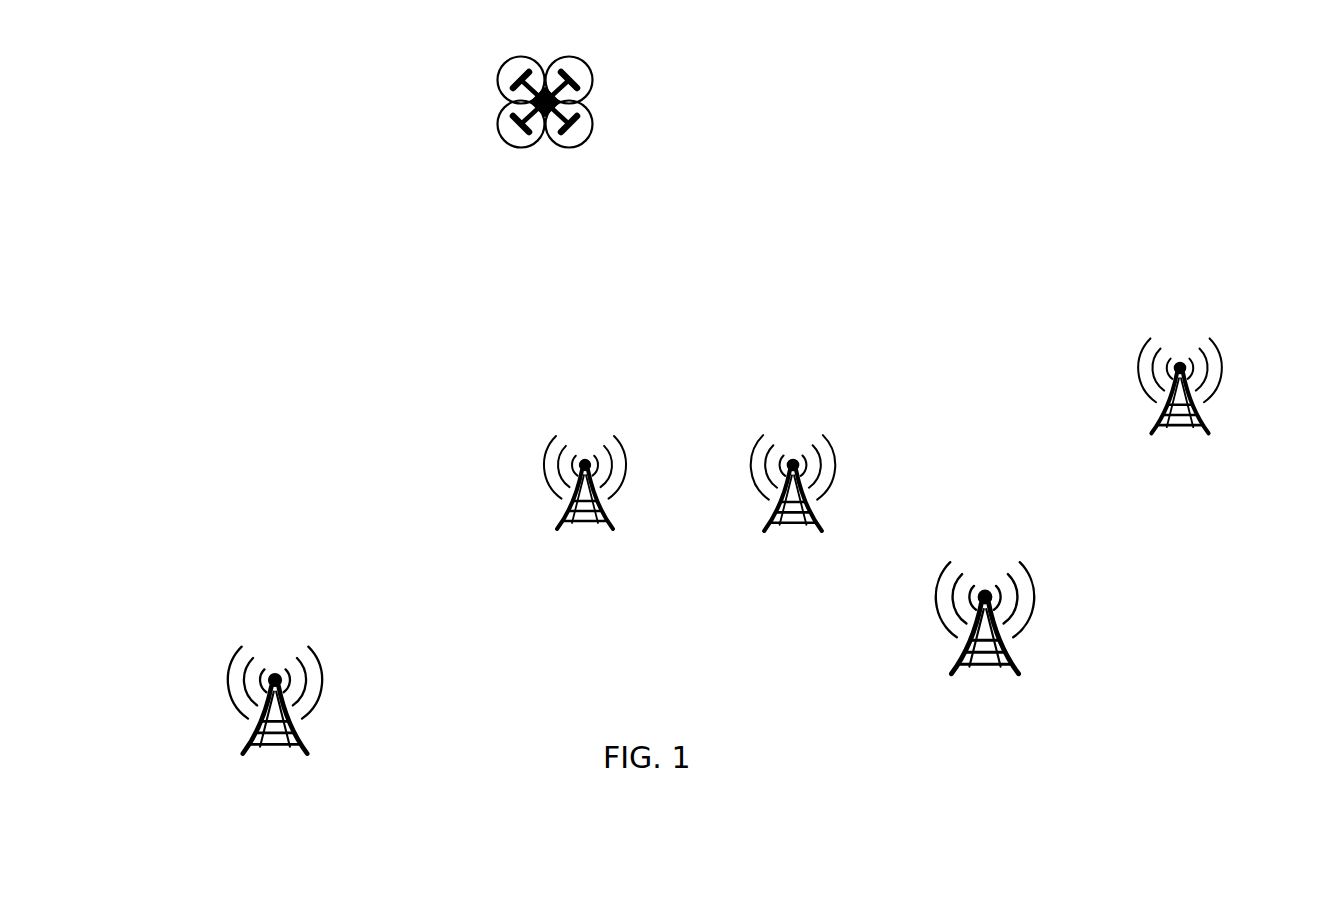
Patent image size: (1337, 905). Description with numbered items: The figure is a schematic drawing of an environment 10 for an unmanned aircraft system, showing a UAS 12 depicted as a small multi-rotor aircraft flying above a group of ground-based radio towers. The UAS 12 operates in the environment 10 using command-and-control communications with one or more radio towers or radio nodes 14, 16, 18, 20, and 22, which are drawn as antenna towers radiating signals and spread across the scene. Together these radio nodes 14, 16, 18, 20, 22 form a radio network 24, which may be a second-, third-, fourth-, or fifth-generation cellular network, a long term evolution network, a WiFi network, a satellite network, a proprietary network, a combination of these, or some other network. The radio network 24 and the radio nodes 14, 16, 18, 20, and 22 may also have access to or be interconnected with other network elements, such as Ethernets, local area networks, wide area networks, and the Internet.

The environment 10 is at (874, 116).
The UAS 12 is at (575, 55).
The radio node 14 is at (298, 740).
The radio node 16 is at (610, 520).
The radio node 18 is at (817, 520).
The radio node 20 is at (1005, 655).
The radio node 22 is at (1198, 415).
The radio network 24 is at (629, 633).